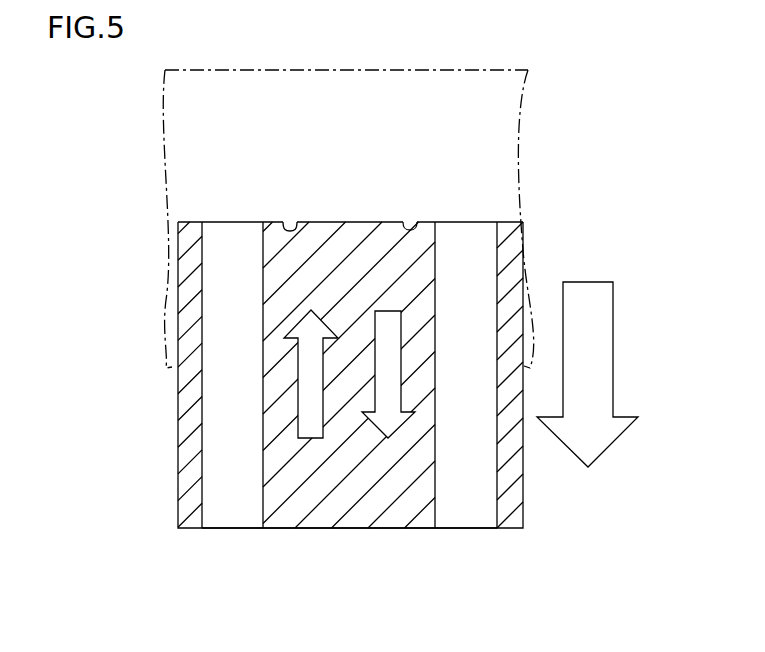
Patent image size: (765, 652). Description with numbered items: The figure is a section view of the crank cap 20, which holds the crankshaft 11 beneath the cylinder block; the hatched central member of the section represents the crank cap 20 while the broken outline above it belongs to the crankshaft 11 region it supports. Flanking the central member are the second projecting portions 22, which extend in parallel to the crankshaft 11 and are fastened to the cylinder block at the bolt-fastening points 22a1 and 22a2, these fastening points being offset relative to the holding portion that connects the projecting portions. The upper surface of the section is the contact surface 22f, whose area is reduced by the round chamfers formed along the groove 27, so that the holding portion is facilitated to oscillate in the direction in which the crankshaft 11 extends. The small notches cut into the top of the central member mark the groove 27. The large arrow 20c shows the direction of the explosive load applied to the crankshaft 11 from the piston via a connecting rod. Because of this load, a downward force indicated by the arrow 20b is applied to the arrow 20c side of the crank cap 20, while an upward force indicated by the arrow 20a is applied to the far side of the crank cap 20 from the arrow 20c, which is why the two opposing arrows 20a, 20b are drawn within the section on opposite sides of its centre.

The crankshaft 11 is at (514, 146).
The crank cap 20 is at (512, 548).
The arrow 20a is at (313, 420).
The arrow 20b is at (390, 420).
The arrow 20c is at (594, 394).
The second projecting portion 22 is at (185, 437).
The contact surface 22f is at (188, 221).
The bolt-fastening point 22a1 is at (228, 488).
The bolt-fastening point 22a2 is at (468, 490).
The groove 27 is at (291, 222).